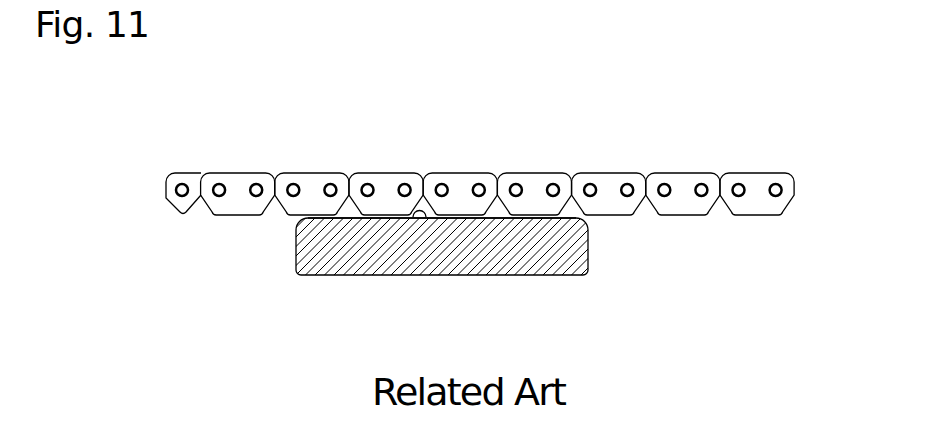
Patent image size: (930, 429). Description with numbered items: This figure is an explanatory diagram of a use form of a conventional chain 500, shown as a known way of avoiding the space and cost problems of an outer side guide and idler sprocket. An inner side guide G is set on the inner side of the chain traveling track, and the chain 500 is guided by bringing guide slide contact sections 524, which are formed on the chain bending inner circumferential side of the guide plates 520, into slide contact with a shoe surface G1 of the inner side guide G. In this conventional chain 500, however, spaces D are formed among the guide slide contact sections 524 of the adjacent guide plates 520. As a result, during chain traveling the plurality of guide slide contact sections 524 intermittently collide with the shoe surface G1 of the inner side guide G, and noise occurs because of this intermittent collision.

The chain 500 is at (467, 217).
The guide plate 520 is at (313, 192).
The guide slide contact section 524 is at (618, 219).
The space D is at (648, 217).
The inner side guide G is at (453, 245).
The shoe surface G1 is at (413, 218).